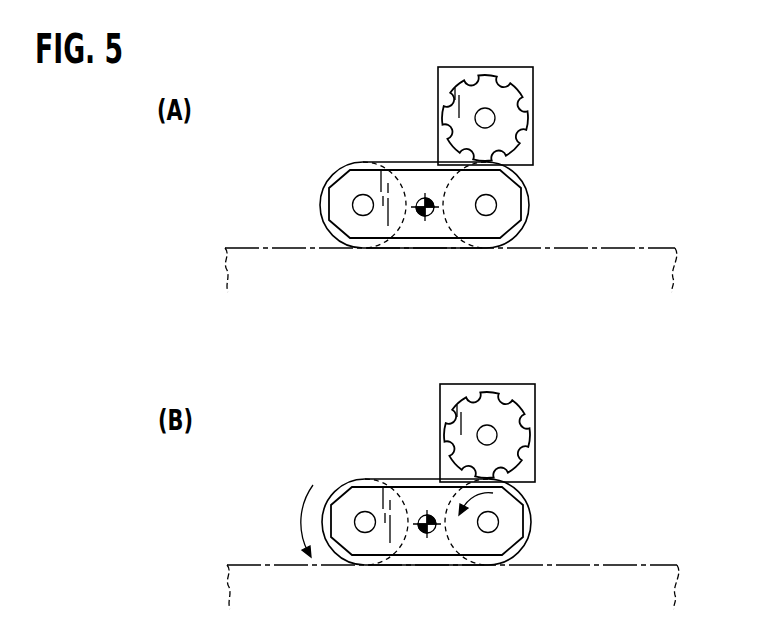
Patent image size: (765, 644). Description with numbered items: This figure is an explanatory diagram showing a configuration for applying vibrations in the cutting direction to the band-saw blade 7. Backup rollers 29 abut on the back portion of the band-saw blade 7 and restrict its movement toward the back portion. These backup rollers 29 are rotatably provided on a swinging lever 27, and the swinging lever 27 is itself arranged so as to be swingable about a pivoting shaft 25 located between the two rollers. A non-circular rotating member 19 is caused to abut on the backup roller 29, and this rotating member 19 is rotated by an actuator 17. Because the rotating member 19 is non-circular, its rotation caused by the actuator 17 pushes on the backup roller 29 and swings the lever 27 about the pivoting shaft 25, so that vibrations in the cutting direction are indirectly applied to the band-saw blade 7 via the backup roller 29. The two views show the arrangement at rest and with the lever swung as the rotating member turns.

The band-saw blade 7 is at (618, 247).
The actuator 17 is at (507, 73).
The non-circular rotating member 19 is at (510, 96).
The pivoting shaft 25 is at (418, 218).
The swinging lever 27 is at (415, 170).
The backup roller 29 is at (337, 173).